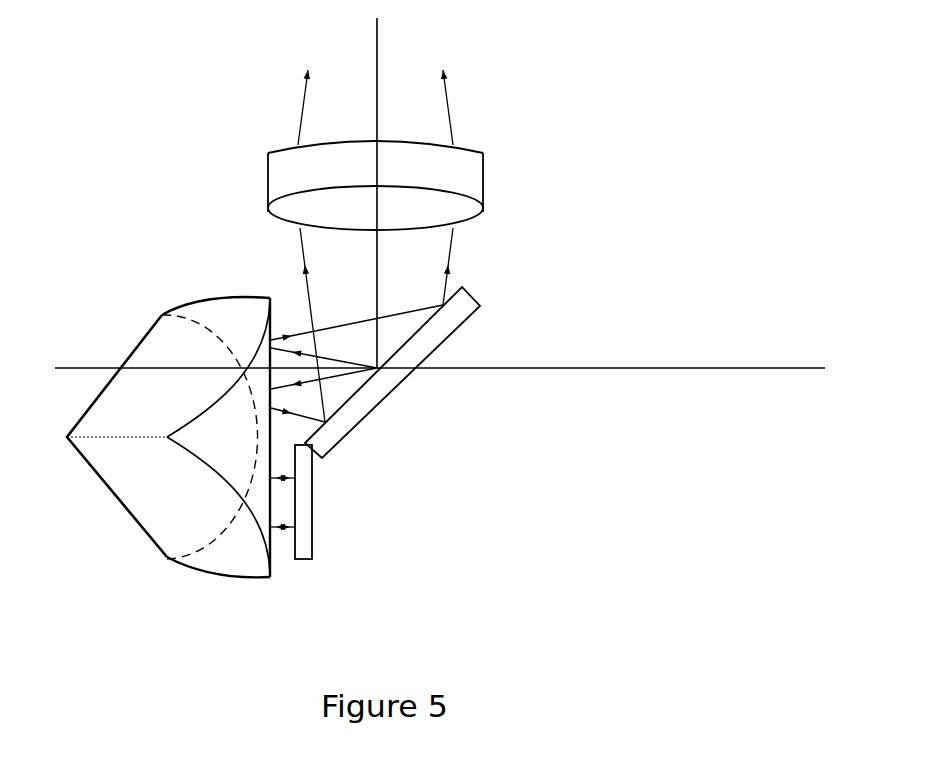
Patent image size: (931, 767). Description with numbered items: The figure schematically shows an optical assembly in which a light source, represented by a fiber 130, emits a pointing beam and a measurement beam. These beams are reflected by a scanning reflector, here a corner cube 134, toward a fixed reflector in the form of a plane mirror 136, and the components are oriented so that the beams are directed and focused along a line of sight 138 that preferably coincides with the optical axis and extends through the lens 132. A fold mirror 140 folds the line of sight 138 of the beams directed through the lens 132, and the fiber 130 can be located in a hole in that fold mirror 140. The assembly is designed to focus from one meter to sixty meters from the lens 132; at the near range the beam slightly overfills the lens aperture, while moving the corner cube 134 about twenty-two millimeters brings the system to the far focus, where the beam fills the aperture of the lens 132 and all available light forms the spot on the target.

The fiber 130 is at (413, 370).
The lens 132 is at (468, 183).
The corner cube 134 is at (163, 537).
The plane mirror 136 is at (312, 548).
The line of sight 138 is at (375, 78).
The fold mirror 140 is at (343, 428).